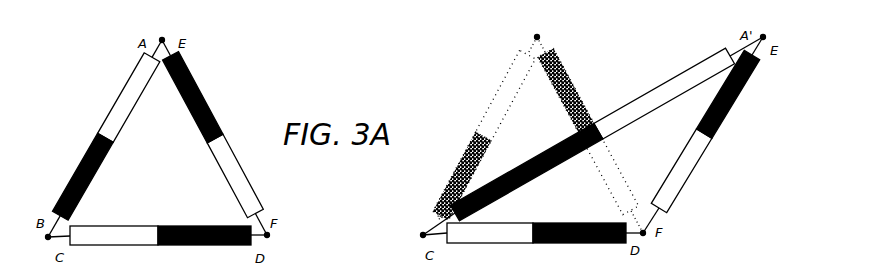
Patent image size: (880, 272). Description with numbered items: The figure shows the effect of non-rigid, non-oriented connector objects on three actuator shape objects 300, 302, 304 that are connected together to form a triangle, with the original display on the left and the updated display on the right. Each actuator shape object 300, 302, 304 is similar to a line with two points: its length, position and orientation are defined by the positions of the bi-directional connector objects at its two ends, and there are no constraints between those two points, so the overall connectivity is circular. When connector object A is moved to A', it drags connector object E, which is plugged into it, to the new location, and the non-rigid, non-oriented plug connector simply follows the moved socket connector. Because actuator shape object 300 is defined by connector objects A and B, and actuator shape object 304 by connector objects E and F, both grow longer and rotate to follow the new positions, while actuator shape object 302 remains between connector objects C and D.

The actuator shape object 300 is at (405, 137).
The actuator shape object 302 is at (345, 247).
The actuator shape object 304 is at (462, 136).